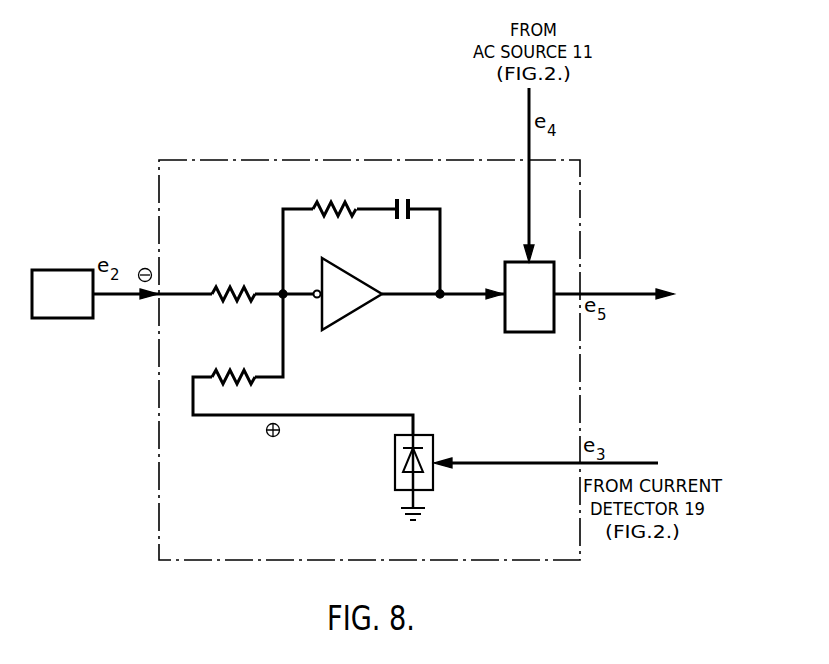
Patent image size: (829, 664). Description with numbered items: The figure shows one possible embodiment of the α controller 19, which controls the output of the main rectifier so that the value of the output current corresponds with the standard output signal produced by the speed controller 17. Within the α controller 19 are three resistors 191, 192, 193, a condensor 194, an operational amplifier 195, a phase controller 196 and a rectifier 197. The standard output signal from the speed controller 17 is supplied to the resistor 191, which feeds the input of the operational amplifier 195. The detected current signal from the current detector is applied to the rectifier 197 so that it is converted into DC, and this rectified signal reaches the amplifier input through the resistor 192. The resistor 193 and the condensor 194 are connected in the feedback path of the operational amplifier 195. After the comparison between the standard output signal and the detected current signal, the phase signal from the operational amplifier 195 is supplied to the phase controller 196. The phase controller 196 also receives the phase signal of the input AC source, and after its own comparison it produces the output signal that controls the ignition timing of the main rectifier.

The α controller 19 is at (199, 167).
The speed controller 17 is at (62, 308).
The resistor 191 is at (235, 284).
The resistor 192 is at (236, 372).
The resistor 193 is at (345, 205).
The condensor 194 is at (412, 205).
The operational amplifier 195 is at (367, 276).
The phase controller 196 is at (522, 318).
The rectifier 197 is at (393, 460).